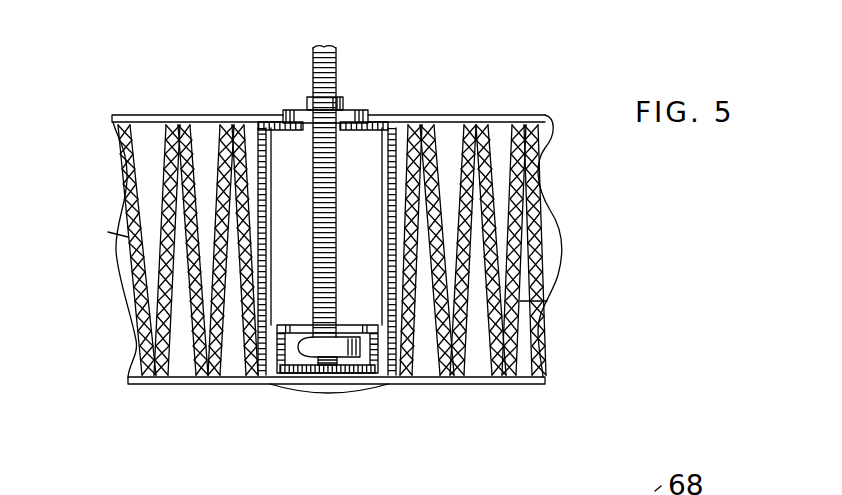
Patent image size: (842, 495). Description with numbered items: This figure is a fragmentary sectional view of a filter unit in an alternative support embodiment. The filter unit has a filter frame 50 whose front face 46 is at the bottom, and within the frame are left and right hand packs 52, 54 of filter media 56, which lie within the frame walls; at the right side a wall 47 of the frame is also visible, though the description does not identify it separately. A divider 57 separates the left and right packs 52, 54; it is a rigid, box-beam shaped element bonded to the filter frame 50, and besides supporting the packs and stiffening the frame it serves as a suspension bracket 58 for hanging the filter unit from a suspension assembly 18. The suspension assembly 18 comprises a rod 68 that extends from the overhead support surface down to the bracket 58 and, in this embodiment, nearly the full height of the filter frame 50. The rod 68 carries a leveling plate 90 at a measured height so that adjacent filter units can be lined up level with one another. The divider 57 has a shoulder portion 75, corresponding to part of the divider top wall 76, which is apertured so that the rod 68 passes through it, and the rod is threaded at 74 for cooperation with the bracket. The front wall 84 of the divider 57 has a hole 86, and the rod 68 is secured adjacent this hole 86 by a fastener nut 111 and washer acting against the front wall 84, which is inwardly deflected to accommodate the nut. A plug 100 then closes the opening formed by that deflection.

The suspension assembly 18 is at (337, 72).
The front face 46 is at (483, 385).
The flexible side wall 47 is at (500, 115).
The filter frame 50 is at (163, 119).
The left hand pack 52 is at (165, 157).
The right hand pack 54 is at (540, 293).
The filter media 56 is at (122, 236).
The divider 57 is at (387, 248).
The suspension bracket 58 is at (384, 120).
The rod 68 is at (313, 46).
The threaded portion 74 is at (318, 384).
The shoulder portion 75 is at (272, 120).
The divider top wall 76 is at (292, 127).
The front wall 84 is at (283, 325).
The hole 86 is at (380, 386).
The leveling plate 90 is at (288, 112).
The plug 100 is at (332, 393).
The fastener nut 111 is at (300, 348).